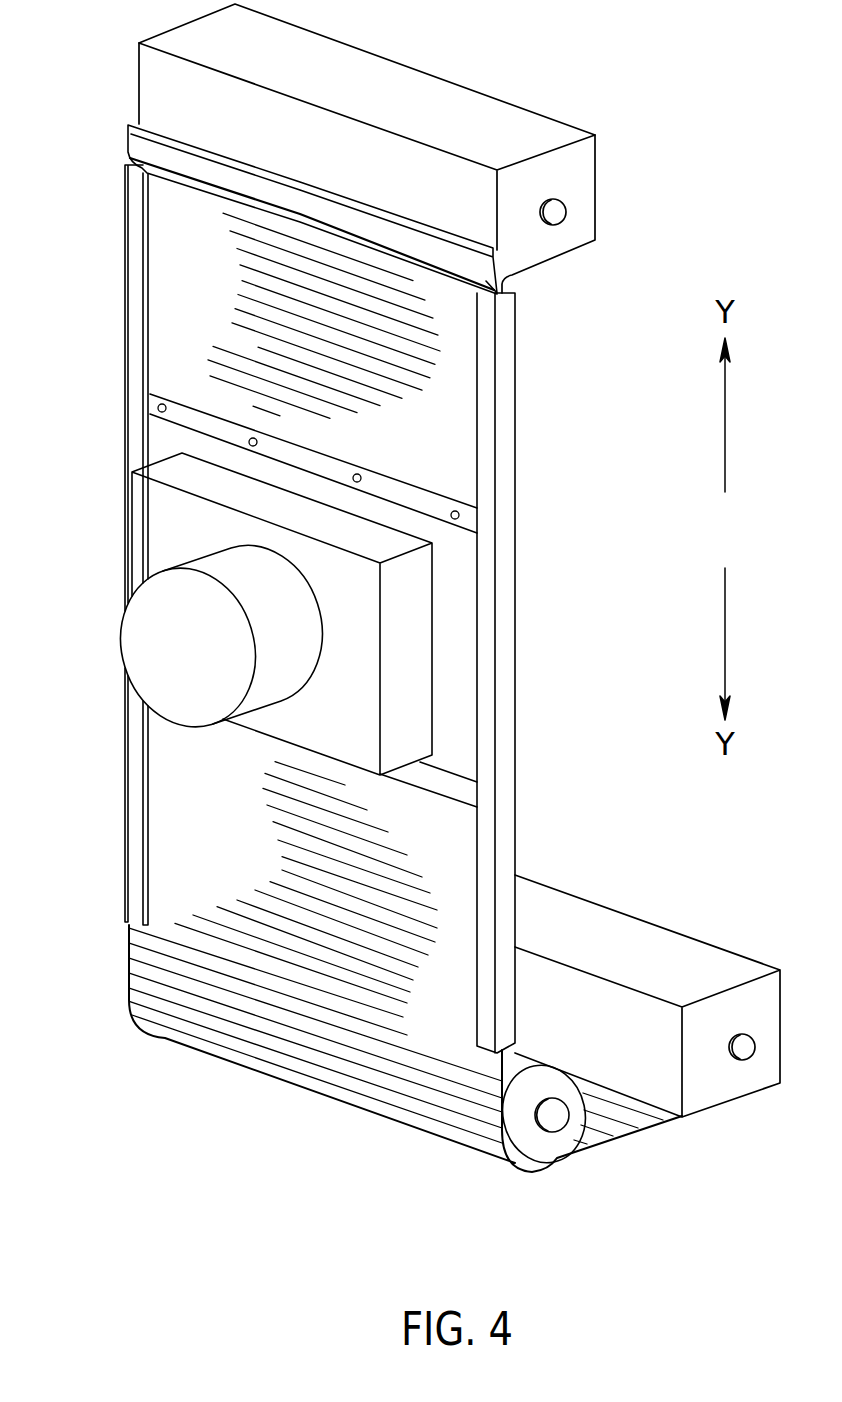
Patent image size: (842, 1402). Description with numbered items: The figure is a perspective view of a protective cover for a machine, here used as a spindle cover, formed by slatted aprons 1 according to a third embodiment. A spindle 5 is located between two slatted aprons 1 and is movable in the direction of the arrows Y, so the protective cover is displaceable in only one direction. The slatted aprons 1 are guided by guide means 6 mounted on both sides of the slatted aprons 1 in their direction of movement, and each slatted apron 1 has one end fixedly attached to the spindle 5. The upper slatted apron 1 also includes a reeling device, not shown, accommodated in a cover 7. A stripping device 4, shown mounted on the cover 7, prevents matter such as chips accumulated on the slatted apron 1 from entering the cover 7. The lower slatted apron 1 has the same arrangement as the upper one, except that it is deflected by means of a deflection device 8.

The slatted apron 1 is at (253, 342).
The stripping device 4 is at (473, 263).
The spindle 5 is at (145, 637).
The guide means 6 is at (124, 251).
The cover 7 is at (478, 118).
The deflection device 8 is at (530, 1147).